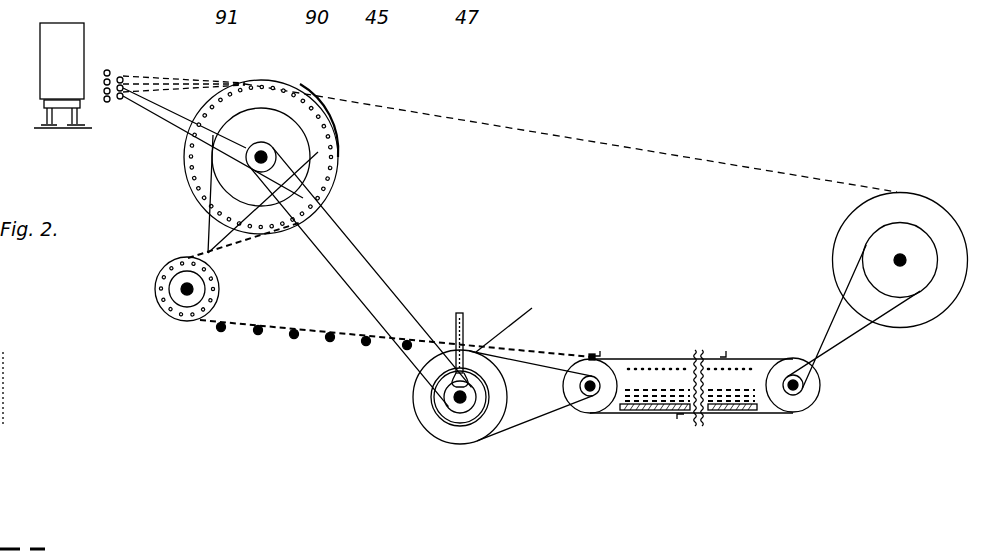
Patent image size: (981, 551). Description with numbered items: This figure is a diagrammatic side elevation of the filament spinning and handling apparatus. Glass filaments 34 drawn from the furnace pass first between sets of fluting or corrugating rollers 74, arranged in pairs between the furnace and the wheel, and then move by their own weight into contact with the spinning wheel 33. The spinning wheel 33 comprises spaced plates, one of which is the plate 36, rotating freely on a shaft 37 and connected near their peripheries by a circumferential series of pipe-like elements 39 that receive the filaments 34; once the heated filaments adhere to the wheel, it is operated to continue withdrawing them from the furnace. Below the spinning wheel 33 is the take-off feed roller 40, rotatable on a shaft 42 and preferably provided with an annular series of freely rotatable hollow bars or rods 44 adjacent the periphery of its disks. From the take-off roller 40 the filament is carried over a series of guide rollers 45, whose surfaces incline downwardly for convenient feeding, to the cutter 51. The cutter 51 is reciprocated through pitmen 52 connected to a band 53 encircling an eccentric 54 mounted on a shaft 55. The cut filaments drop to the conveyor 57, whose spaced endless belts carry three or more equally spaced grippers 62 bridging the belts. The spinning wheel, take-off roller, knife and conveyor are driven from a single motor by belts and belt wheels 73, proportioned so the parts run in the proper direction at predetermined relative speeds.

The fluting or corrugating rollers 74 is at (110, 71).
The filaments 34 is at (171, 78).
The spinning wheel 33 is at (318, 158).
The pipe-like elements 39 is at (318, 95).
The plate 36 is at (185, 156).
The shaft 37 is at (268, 140).
The belts and belt wheels 73 is at (237, 241).
The take-off feed roller 40 is at (160, 287).
The hollow bars or rods 44 is at (160, 292).
The shaft 42 is at (182, 294).
The guide rollers 45 is at (255, 333).
The shaft 55 is at (452, 403).
The band 53 is at (492, 406).
The eccentric 54 is at (482, 392).
The cutter 51 is at (464, 342).
The pitmen 52 is at (515, 323).
The conveyor 57 is at (690, 358).
The grippers 62 is at (672, 385).